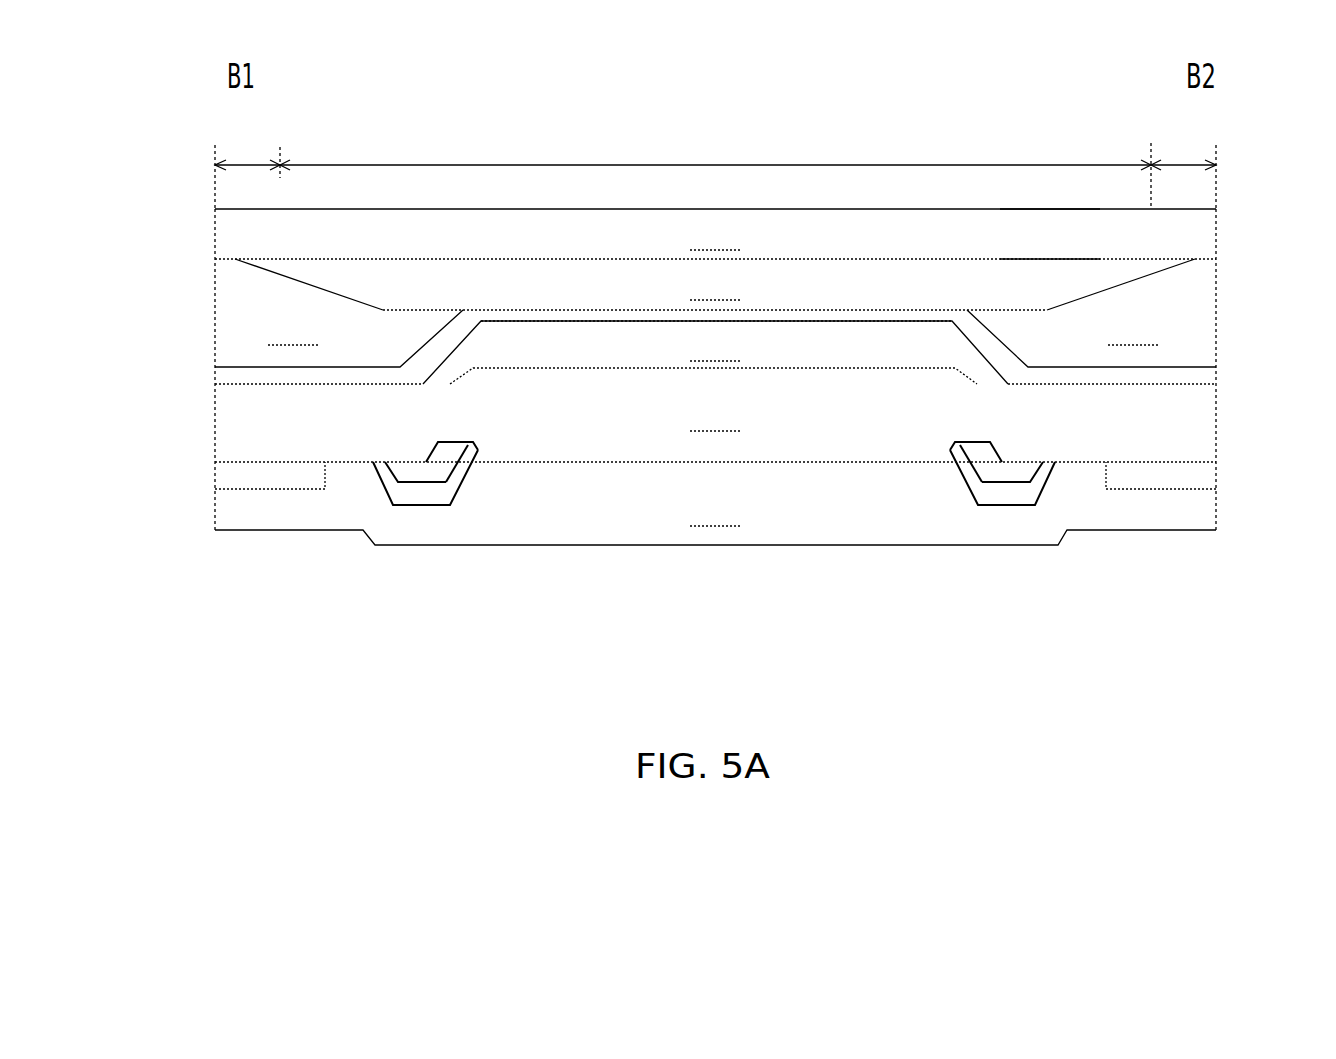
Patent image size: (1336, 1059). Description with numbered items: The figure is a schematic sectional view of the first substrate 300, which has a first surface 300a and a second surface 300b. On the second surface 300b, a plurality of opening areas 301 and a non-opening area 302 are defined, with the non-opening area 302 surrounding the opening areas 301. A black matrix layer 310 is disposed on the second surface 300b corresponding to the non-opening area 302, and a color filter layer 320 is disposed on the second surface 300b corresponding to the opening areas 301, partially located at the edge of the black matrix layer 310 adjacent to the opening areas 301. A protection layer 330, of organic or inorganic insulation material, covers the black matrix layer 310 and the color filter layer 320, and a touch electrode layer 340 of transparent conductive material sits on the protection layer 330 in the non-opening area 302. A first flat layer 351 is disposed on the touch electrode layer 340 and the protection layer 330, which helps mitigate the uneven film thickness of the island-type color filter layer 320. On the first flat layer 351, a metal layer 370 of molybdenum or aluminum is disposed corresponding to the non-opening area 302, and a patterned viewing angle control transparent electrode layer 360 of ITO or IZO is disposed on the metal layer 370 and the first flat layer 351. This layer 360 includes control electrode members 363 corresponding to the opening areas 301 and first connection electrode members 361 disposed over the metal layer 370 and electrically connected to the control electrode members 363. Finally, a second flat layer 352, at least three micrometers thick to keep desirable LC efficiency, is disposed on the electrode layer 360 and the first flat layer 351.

The first substrate 300 is at (715, 369).
The first surface 300a is at (1050, 207).
The second surface 300b is at (1052, 262).
The opening areas 301 is at (715, 158).
The non-opening area 302 is at (715, 144).
The black matrix layer 310 is at (715, 284).
The color filter layer 320 is at (715, 303).
The protection layer 330 is at (213, 380).
The touch electrode layer 340 is at (713, 352).
The first flat layer 351 is at (715, 428).
The second flat layer 352 is at (715, 517).
The patterned viewing angle control transparent electrode layer 360 is at (701, 564).
The first connection electrode members 361 is at (432, 493).
The control electrode members 363 is at (230, 479).
The metal layer 370 is at (418, 472).